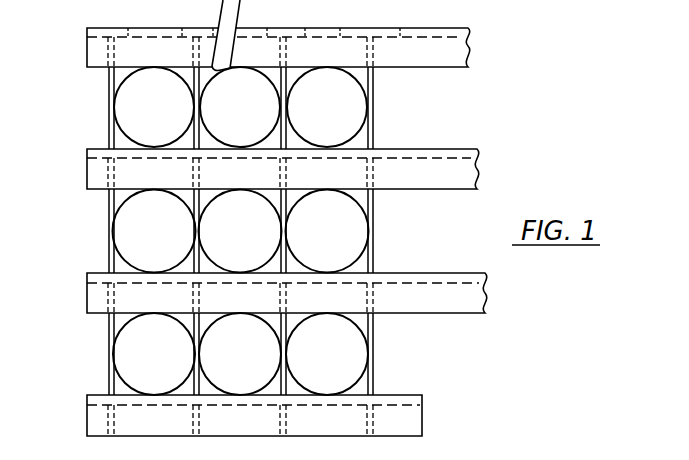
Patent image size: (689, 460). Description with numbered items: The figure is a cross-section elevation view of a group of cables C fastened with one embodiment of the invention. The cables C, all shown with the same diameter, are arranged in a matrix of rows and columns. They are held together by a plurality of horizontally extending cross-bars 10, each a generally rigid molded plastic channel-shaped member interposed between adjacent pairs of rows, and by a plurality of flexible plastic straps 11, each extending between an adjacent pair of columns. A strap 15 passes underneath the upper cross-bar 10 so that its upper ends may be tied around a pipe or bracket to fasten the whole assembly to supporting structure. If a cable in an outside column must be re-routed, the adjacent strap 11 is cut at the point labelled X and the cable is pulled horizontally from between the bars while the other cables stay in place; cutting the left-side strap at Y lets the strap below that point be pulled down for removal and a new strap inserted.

The cross-bar 10 is at (445, 67).
The flexible plastic strap 11 is at (192, 79).
The strap 15 is at (233, 15).
The cable C is at (133, 118).
The strap cutting point X is at (113, 252).
The strap cutting point Y is at (108, 70).